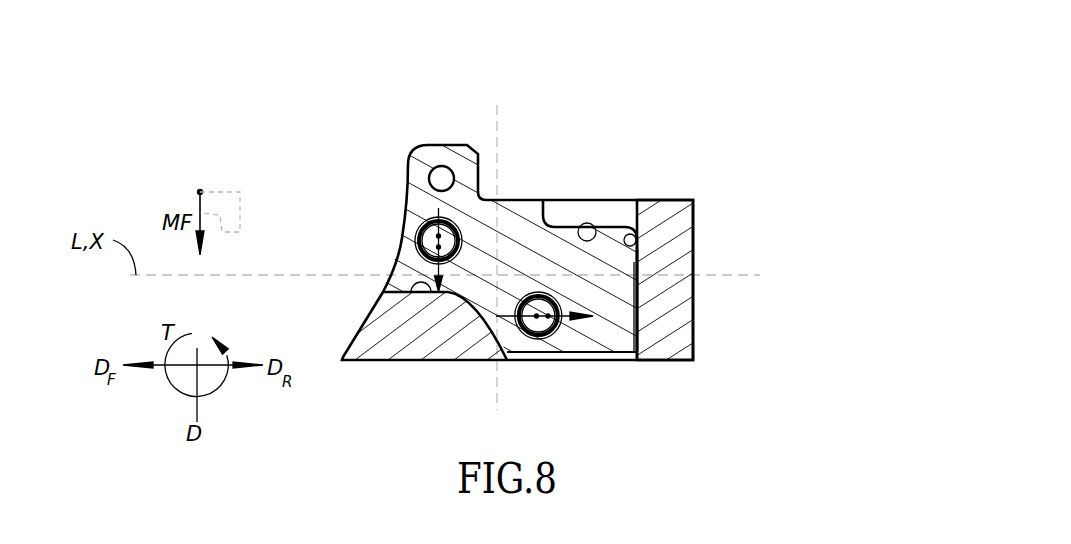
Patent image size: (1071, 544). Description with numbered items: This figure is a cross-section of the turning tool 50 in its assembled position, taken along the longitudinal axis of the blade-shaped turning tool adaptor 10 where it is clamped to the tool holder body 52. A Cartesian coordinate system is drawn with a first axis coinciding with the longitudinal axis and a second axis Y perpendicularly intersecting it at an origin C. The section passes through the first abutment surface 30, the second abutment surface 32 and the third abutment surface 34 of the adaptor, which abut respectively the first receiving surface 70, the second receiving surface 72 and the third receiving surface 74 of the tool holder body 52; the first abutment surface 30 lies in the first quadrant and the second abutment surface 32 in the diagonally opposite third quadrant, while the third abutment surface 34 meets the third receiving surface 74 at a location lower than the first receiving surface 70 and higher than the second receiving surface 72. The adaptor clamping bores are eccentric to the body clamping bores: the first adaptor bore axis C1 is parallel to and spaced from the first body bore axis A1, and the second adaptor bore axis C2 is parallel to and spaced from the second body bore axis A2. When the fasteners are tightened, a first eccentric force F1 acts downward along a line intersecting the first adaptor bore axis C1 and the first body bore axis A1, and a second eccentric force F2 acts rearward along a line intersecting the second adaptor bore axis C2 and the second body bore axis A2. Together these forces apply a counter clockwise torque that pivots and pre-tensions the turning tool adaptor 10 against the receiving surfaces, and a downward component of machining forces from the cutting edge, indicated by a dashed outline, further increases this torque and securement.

The turning tool adaptor 10 is at (405, 140).
The first abutment surface 30 is at (601, 199).
The second abutment surface 32 is at (384, 304).
The third abutment surface 34 is at (640, 254).
The turning tool 50 is at (754, 219).
The tool holder body 52 is at (681, 185).
The first receiving surface 70 is at (579, 224).
The second receiving surface 72 is at (428, 296).
The third receiving surface 74 is at (640, 234).
The origin C is at (497, 277).
The first adaptor bore axis C1 is at (420, 223).
The second adaptor bore axis C2 is at (540, 338).
The first body bore axis A1 is at (423, 262).
The second body bore axis A2 is at (556, 340).
The first eccentric force F1 is at (454, 278).
The second eccentric force F2 is at (595, 319).
The second axis Y is at (497, 118).